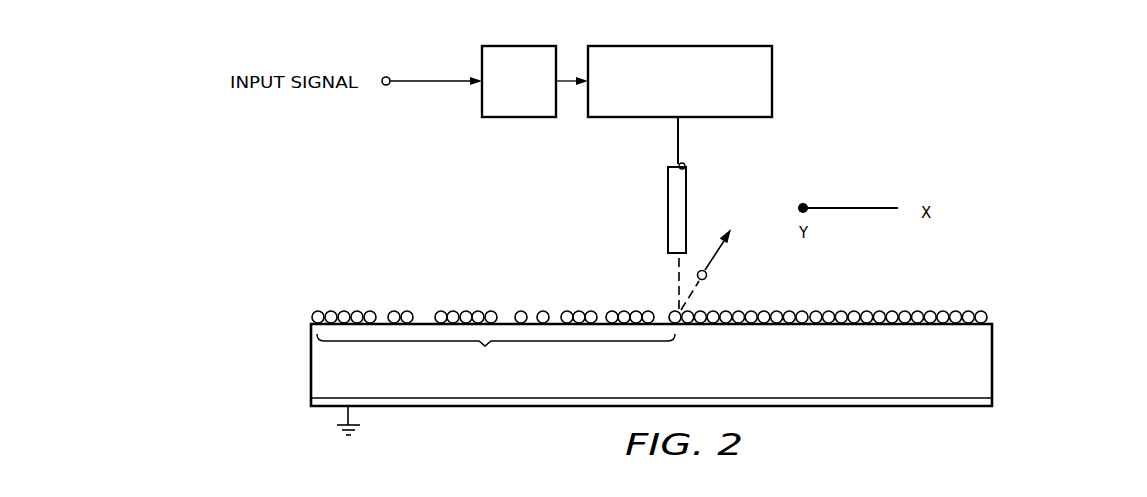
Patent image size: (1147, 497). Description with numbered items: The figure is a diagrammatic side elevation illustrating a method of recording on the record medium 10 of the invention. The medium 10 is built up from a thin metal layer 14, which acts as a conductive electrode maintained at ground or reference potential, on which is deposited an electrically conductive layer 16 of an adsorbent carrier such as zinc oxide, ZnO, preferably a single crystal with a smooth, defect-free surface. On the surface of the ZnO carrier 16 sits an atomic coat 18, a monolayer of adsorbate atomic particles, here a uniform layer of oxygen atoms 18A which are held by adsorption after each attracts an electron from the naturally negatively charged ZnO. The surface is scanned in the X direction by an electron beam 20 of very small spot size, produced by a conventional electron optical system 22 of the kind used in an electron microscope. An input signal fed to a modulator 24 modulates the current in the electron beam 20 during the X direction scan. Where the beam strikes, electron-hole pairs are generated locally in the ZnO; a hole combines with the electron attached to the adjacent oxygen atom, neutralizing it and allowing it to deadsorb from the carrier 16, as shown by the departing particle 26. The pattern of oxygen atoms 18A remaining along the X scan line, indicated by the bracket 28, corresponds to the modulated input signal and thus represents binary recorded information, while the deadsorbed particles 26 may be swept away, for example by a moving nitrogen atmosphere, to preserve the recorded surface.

The medium 10 is at (868, 297).
The thin metal layer 14 is at (311, 401).
The electrically conductive layer of adsorbent carrier 16 is at (311, 357).
The atomic coat 18 is at (311, 319).
The oxygen atoms 18A is at (365, 311).
The electron beam 20 is at (677, 272).
The electron optical system 22 is at (643, 118).
The modulator 24 is at (517, 118).
The deadsorbed atomic particle 26 is at (706, 276).
The bracket 28 is at (496, 354).